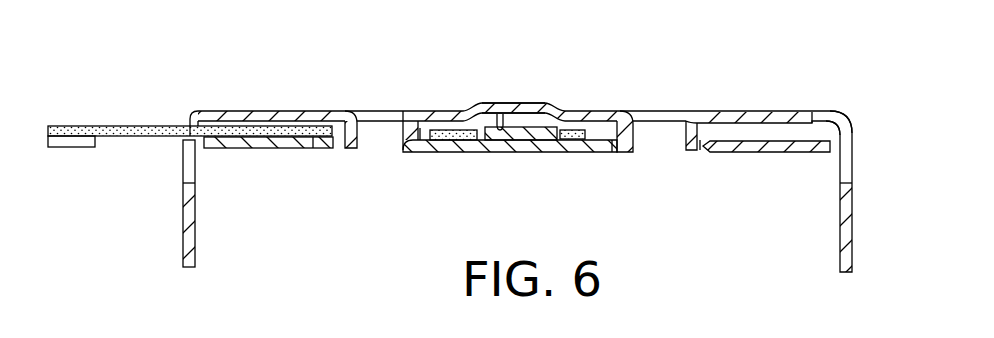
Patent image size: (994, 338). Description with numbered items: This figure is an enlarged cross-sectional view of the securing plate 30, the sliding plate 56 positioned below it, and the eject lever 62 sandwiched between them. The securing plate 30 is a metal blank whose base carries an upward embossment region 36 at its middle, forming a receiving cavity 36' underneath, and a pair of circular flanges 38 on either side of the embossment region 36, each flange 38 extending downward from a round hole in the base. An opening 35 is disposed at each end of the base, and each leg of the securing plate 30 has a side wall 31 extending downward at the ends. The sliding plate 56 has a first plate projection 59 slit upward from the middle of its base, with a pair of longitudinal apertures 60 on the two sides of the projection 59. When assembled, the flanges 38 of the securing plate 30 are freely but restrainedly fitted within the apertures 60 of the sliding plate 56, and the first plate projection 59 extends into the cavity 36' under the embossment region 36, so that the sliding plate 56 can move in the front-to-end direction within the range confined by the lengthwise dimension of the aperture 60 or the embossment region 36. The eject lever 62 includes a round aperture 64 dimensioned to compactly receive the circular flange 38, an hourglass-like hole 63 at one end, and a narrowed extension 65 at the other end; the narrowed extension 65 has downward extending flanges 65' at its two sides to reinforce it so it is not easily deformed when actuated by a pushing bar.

The securing plate 30 is at (273, 113).
The side wall 31 is at (846, 203).
The opening 35 is at (220, 111).
The embossment region 36 is at (520, 71).
The cavity 36' is at (513, 66).
The circular flange 38 is at (345, 149).
The sliding plate 56 is at (462, 142).
The first plate projection 59 is at (545, 115).
The longitudinal aperture 60 is at (313, 142).
The eject lever 62 is at (250, 139).
The hourglass-like hole 63 is at (482, 141).
The round aperture 64 is at (343, 113).
The narrowed extension 65 is at (190, 162).
The downward extending flange 65' is at (68, 167).